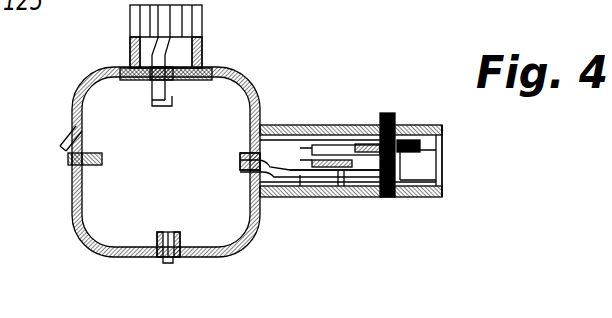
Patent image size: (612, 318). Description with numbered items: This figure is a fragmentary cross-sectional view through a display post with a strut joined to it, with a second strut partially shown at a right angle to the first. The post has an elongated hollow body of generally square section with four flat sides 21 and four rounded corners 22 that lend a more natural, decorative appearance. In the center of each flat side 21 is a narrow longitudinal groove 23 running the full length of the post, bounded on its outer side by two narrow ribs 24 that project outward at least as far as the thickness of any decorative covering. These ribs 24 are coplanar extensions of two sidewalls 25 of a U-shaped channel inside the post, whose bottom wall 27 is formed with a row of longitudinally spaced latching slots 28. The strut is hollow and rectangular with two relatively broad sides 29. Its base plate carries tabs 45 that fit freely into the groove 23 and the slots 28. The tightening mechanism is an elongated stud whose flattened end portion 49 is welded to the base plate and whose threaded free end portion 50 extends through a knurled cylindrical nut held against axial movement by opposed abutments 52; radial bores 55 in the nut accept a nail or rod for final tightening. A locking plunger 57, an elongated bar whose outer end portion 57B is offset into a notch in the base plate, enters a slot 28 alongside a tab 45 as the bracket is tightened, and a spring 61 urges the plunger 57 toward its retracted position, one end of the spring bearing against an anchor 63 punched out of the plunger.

The flat side 21 is at (260, 112).
The rounded corner 22 is at (247, 85).
The longitudinal groove 23 is at (170, 264).
The rib 24 is at (70, 174).
The sidewall 25 is at (98, 153).
The bottom wall 27 is at (82, 173).
The slot 28 is at (100, 167).
The broad side 29 is at (205, 44).
The tab 45 is at (172, 101).
The flattened end portion 49 is at (362, 135).
The threaded free end portion 50 is at (443, 155).
The abutment 52 is at (392, 93).
The radial bore 55 is at (400, 118).
The locking plunger 57 is at (302, 192).
The outer end portion 57B is at (165, 100).
The spring 61 is at (342, 194).
The anchor 63 is at (348, 198).